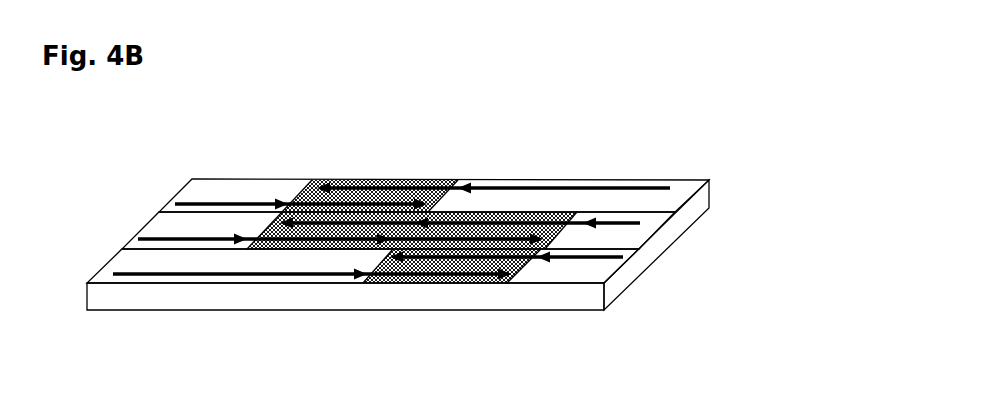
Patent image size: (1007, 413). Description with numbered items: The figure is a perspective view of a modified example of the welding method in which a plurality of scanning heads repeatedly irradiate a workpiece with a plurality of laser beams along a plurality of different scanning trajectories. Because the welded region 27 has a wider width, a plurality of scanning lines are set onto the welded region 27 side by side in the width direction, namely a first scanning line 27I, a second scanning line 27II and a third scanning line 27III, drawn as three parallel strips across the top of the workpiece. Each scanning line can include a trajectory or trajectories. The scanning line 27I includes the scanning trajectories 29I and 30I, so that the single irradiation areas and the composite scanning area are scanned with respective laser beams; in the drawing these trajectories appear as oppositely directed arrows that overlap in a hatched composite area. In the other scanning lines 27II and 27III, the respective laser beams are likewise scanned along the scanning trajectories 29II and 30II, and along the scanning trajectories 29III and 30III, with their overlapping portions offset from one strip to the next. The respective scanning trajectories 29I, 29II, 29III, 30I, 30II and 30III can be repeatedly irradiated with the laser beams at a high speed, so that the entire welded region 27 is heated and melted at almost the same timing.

The welded region 27 is at (613, 167).
The scanning line 27I is at (677, 195).
The scanning line 27II is at (651, 229).
The scanning line 27III is at (608, 264).
The scanning trajectory 29I is at (380, 218).
The scanning trajectory 29II is at (316, 238).
The scanning trajectory 29III is at (406, 268).
The scanning trajectory 30I is at (410, 215).
The scanning trajectory 30II is at (473, 212).
The scanning trajectory 30III is at (449, 262).